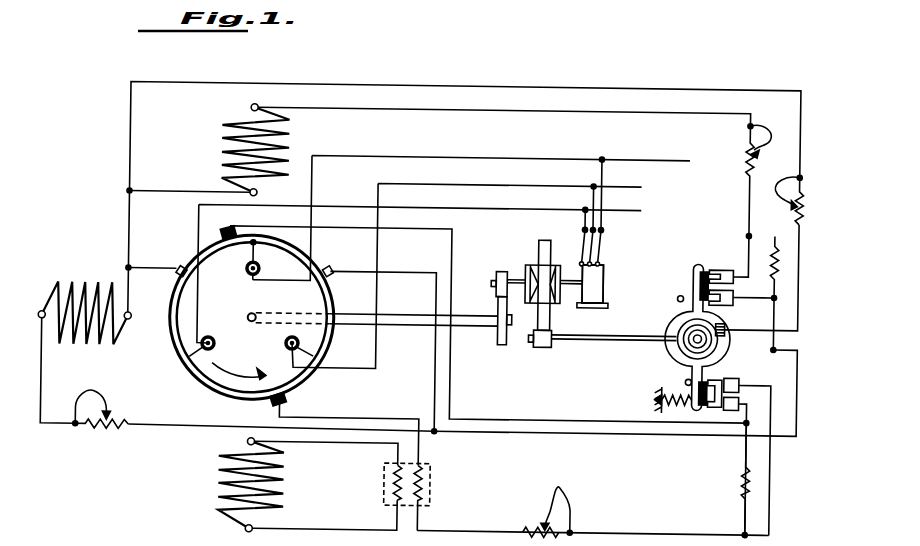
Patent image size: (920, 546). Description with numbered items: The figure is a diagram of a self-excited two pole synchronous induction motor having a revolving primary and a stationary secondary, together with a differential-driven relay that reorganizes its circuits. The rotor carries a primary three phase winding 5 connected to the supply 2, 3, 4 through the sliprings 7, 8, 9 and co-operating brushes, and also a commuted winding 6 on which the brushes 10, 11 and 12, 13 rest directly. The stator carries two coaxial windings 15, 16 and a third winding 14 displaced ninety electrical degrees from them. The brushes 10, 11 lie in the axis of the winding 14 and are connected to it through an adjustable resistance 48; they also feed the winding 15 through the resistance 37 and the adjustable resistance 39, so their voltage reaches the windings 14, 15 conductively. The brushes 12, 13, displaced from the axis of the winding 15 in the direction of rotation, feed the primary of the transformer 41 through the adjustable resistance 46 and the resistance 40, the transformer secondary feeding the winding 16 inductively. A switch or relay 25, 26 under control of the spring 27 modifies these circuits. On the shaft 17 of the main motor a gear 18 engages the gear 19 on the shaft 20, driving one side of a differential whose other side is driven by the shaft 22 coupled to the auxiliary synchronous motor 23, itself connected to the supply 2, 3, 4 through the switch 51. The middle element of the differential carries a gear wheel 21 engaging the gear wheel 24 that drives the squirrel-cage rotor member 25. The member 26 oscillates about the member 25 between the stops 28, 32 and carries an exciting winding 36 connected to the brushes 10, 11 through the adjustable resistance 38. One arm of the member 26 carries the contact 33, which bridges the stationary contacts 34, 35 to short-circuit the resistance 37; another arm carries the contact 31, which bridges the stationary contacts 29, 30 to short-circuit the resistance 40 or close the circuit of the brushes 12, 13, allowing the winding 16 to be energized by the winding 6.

The supply 2 is at (478, 214).
The supply 3 is at (425, 271).
The supply 4 is at (473, 272).
The primary three phase winding 5 is at (173, 334).
The commuted winding 6 is at (200, 383).
The slipring 7 is at (244, 259).
The slipring 8 is at (203, 334).
The slipring 9 is at (290, 350).
The brush 10 is at (378, 338).
The brush 11 is at (173, 258).
The brush 12 is at (480, 371).
The brush 13 is at (344, 428).
The third winding 14 is at (85, 299).
The secondary winding 15 is at (439, 152).
The secondary winding 16 is at (288, 485).
The shaft of the main motor 17 is at (424, 326).
The gear 18 is at (498, 346).
The gear 19 is at (498, 270).
The shaft 20 is at (491, 284).
The gear wheel 21 is at (540, 242).
The shaft 22 is at (585, 262).
The auxiliary synchronous motor 23 is at (606, 275).
The gear wheel 24 is at (548, 346).
The member of the switch or relay 25 is at (680, 343).
The member of the switch or relay 26 is at (671, 322).
The spring 27 is at (668, 408).
The stop 28 is at (686, 379).
The stationary contact 29 is at (734, 380).
The stationary contact 30 is at (746, 456).
The contact 31 is at (706, 405).
The stop 32 is at (676, 296).
The contact 33 is at (704, 265).
The stationary contact 34 is at (729, 260).
The stationary contact 35 is at (743, 305).
The exciting winding 36 is at (757, 286).
The resistance 37 is at (765, 293).
The adjustable resistance 38 is at (783, 200).
The adjustable resistance 39 is at (742, 181).
The resistance 40 is at (723, 479).
The transformer 41 is at (420, 494).
The adjustable resistance 46 is at (540, 511).
The rheostat 48 is at (106, 408).
The switch 51 is at (603, 212).